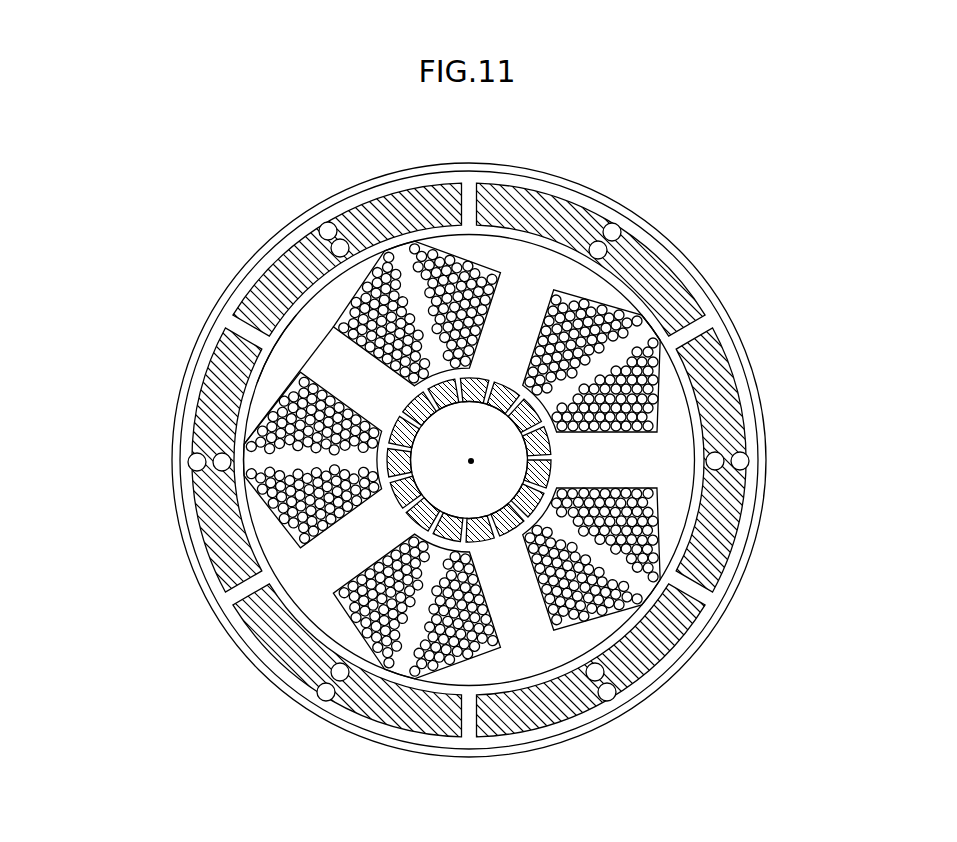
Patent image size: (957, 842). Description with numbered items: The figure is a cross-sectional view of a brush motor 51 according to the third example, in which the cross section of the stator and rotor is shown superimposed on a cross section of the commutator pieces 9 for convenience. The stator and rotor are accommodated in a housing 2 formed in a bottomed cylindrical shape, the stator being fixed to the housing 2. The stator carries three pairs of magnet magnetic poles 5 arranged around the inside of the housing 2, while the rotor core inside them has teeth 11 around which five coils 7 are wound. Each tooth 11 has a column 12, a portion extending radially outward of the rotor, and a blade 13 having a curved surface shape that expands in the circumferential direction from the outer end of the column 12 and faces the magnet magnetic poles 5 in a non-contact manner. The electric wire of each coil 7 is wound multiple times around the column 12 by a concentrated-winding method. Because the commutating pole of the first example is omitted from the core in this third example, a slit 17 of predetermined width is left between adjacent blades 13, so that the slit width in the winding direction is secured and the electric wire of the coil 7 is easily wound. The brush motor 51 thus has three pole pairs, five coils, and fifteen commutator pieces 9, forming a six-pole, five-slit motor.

The brush motor 51 is at (194, 230).
The housing 2 is at (170, 430).
The magnet magnetic pole 5 is at (197, 521).
The coil 7 is at (242, 453).
The commutator piece 9 is at (614, 548).
The tooth 11 is at (342, 386).
The column 12 is at (283, 393).
The blade 13 is at (270, 343).
The slit 17 is at (654, 324).